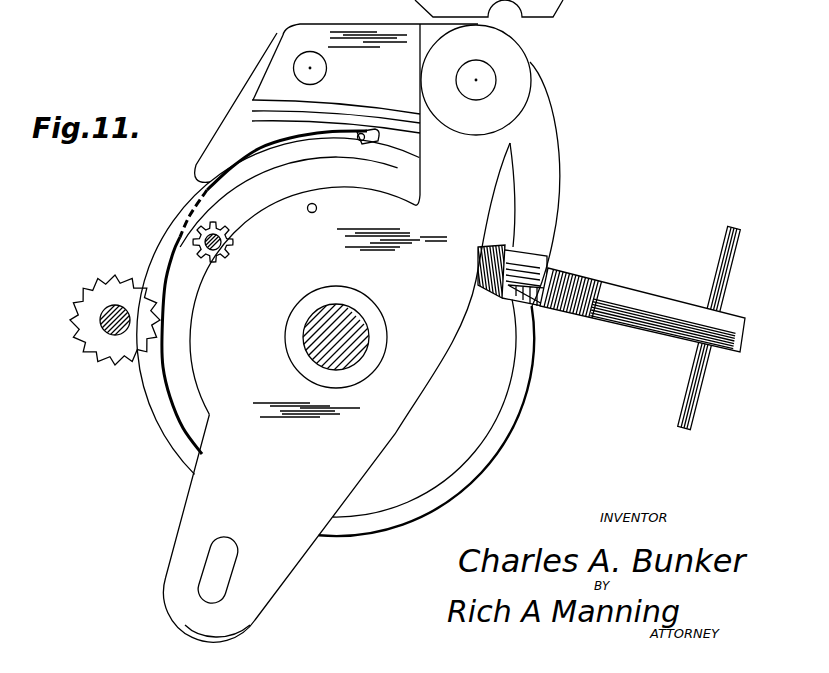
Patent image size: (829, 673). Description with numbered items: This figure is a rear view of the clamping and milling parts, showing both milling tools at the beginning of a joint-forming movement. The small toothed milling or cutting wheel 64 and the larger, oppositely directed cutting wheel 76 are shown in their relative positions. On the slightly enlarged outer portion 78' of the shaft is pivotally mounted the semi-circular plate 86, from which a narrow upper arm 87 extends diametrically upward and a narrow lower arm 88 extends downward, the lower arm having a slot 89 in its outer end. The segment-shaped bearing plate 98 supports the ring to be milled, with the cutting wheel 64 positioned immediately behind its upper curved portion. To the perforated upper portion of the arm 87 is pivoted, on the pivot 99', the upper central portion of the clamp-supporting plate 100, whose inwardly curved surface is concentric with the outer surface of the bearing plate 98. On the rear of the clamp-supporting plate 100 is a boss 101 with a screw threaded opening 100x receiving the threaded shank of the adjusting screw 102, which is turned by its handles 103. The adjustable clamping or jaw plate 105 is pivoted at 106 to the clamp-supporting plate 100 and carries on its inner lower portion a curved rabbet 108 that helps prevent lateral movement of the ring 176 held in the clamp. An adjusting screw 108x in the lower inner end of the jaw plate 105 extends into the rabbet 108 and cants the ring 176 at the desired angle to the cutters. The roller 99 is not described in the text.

The milling or cutting wheel 64 is at (203, 229).
The cutting wheel 76 is at (90, 310).
The outer portion of the shaft 78' is at (363, 339).
The semi-circular plate 86 is at (233, 388).
The narrow plate or arm 87 is at (495, 147).
The narrow plate or arm 88 is at (250, 577).
The slot 89 is at (220, 577).
The bearing plate 98 is at (242, 195).
The roller 99 is at (501, 80).
The pivot 99' is at (521, 64).
The clamp-supporting plate 100 is at (293, 41).
The screw threaded opening 100x is at (543, 303).
The boss 101 is at (538, 262).
The adjusting screw 102 is at (632, 297).
The handles 103 is at (728, 248).
The adjustable clamping or jaw plate 105 is at (238, 100).
The pivot 106 is at (308, 67).
The rabbet 108 is at (232, 167).
The adjusting screw 108x is at (362, 133).
The ring 176 is at (188, 452).